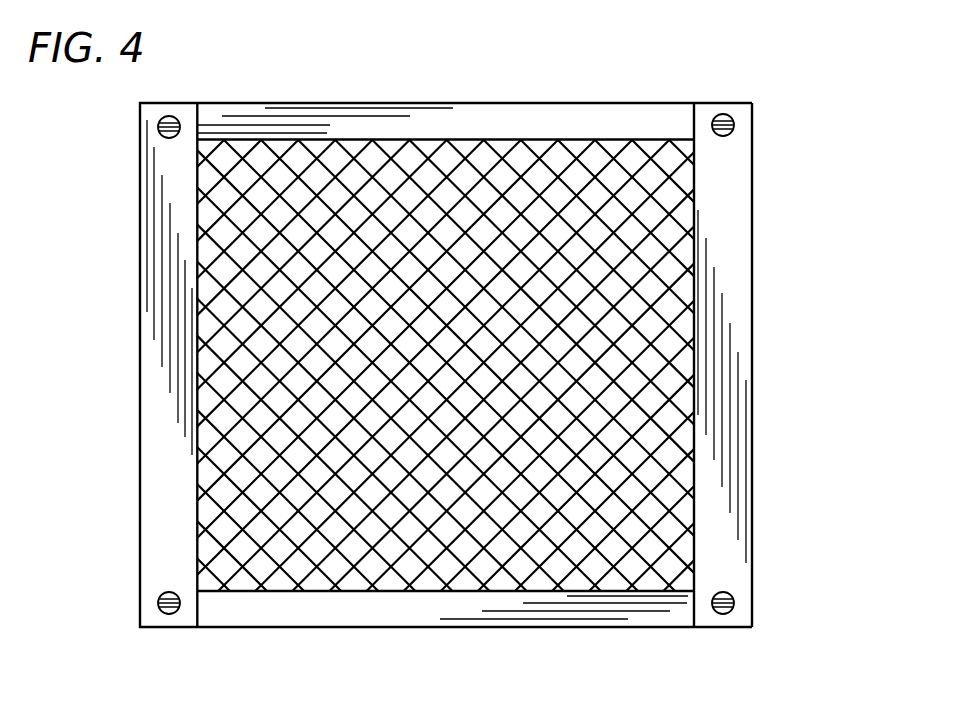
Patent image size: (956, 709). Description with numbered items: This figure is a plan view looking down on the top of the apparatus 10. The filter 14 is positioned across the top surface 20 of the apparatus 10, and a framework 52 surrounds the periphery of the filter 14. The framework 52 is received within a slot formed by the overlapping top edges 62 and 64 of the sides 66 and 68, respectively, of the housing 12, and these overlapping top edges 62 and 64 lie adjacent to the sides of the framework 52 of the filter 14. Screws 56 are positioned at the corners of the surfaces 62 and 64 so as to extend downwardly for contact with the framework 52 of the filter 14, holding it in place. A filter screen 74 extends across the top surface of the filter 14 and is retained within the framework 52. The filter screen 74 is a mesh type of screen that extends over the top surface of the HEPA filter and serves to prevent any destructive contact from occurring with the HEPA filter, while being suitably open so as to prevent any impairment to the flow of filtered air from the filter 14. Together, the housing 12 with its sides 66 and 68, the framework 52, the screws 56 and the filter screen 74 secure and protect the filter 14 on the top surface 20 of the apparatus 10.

The apparatus 10 is at (780, 197).
The housing 12 is at (755, 533).
The filter 14 is at (667, 463).
The top surface 20 is at (388, 617).
The framework 52 is at (570, 105).
The screws 56 is at (158, 122).
The top edge 62 is at (157, 490).
The top edge 64 is at (752, 337).
The side 66 is at (140, 346).
The side 68 is at (753, 280).
The filter screen 74 is at (498, 160).